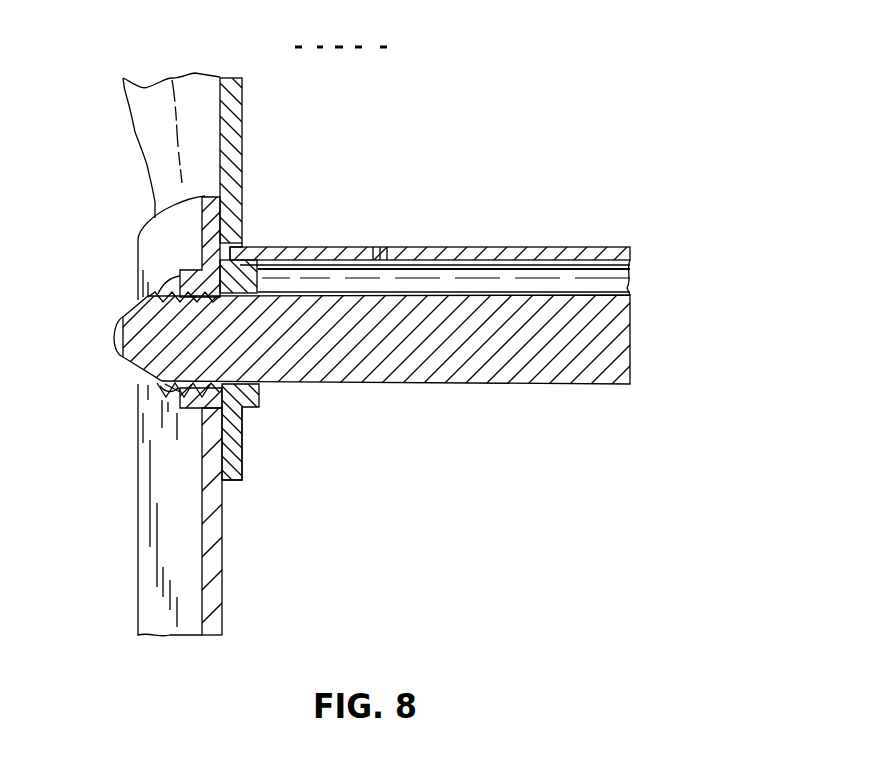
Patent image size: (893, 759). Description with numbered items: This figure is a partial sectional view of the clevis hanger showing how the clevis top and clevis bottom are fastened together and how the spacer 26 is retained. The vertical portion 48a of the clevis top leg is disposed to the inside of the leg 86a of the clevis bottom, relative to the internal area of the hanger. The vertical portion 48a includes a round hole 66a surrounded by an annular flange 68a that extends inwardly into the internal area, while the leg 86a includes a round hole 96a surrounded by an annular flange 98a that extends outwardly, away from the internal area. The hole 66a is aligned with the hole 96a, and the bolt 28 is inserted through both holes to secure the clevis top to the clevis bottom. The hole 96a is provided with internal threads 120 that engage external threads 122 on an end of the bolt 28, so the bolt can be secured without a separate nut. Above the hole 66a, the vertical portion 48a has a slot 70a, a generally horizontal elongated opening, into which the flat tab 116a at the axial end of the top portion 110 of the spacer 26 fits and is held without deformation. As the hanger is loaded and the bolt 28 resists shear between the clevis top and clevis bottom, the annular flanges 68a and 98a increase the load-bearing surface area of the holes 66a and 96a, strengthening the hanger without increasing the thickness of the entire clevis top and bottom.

The spacer 26 is at (578, 225).
The bolt 28 is at (442, 384).
The vertical portion 48a is at (243, 123).
The hole 66a is at (267, 390).
The annular flange 68a is at (258, 410).
The slot 70a is at (262, 231).
The leg 86a is at (240, 530).
The hole 96a is at (158, 290).
The annular flange 98a is at (192, 398).
The top portion 110 is at (450, 244).
The tab 116a is at (218, 253).
The internal threads 120 is at (197, 408).
The external threads 122 is at (175, 386).